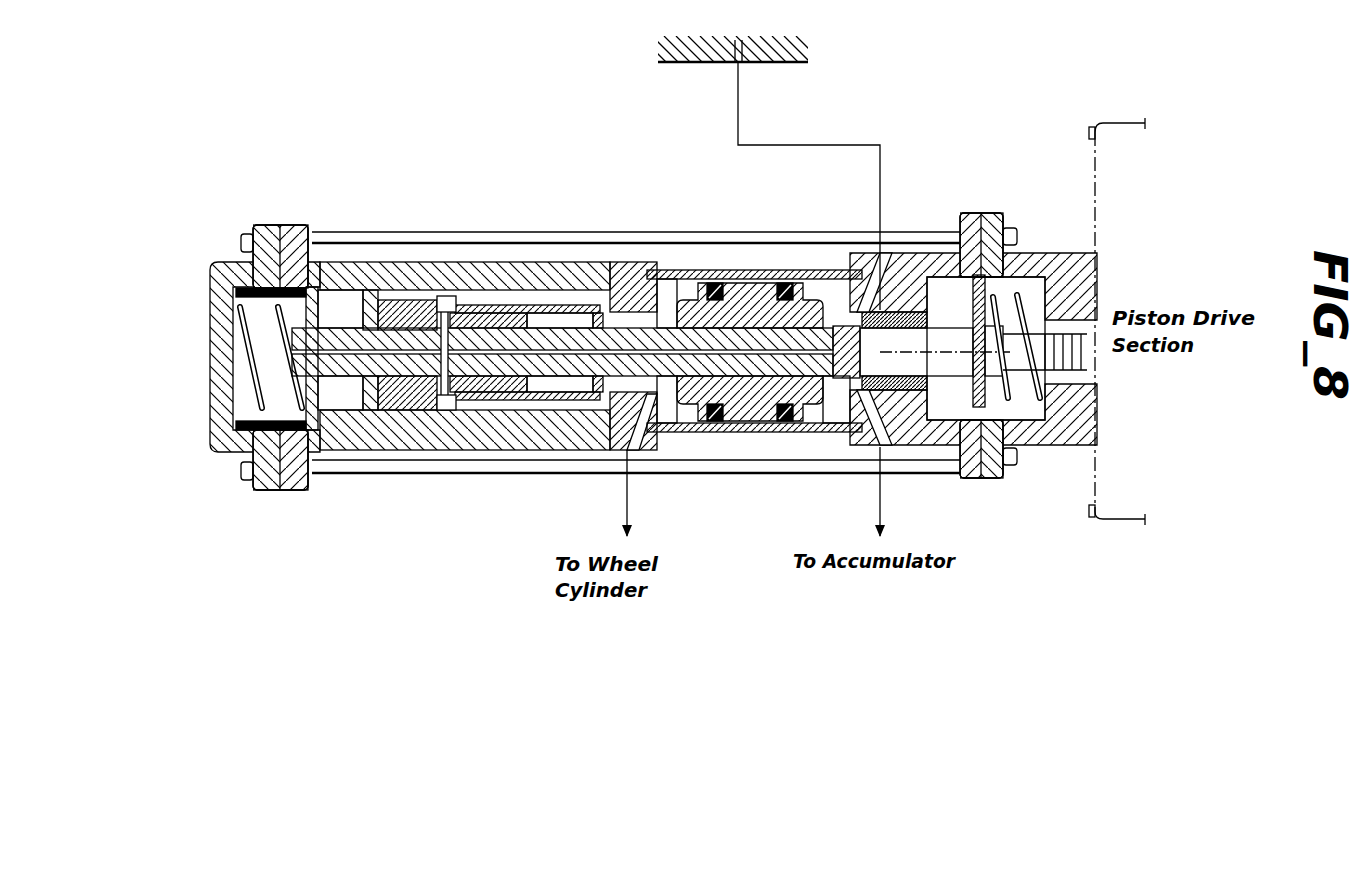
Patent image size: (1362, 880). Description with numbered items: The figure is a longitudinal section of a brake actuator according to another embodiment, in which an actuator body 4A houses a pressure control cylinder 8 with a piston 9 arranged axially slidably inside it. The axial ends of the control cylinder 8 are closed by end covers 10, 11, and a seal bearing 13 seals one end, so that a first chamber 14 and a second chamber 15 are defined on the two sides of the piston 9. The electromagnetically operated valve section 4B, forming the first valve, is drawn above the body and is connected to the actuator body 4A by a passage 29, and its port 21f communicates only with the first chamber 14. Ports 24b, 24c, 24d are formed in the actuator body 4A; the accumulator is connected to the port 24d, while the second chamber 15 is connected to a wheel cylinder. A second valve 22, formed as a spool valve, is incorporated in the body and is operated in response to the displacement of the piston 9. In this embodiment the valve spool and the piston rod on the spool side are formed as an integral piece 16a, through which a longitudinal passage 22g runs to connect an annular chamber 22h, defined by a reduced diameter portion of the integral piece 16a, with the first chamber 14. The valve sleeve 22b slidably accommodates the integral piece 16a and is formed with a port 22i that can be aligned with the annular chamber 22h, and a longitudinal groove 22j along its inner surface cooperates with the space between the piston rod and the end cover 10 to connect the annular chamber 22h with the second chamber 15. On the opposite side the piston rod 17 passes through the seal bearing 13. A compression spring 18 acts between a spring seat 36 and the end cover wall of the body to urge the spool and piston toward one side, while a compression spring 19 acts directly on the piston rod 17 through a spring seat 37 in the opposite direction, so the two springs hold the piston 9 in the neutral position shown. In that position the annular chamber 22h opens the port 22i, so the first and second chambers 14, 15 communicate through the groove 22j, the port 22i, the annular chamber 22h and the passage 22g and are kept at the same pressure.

The actuator body 4A is at (356, 230).
The electromagnetically operated valve section 4B is at (784, 70).
The pressure control cylinder 8 is at (772, 432).
The piston 9 is at (760, 283).
The end cover 10 is at (680, 450).
The end cover 11 is at (840, 432).
The seal bearing 13 is at (986, 348).
The first chamber 14 is at (823, 270).
The second chamber 15 is at (673, 293).
The integral piece 16a is at (622, 312).
The piston rod 17 is at (942, 376).
The compression spring 18 is at (243, 428).
The compression spring 19 is at (1022, 448).
The port 21f is at (733, 63).
The second valve 22 is at (497, 415).
The valve sleeve 22b is at (400, 410).
The longitudinal passage 22g is at (565, 328).
The annular chamber 22h is at (408, 300).
The port 22i is at (446, 296).
The longitudinal groove 22j is at (520, 305).
The port 24b is at (865, 310).
The port 24c is at (648, 455).
The port 24d is at (890, 447).
The passage 29 is at (860, 145).
The spring seat 36 is at (328, 293).
The spring seat 37 is at (975, 440).